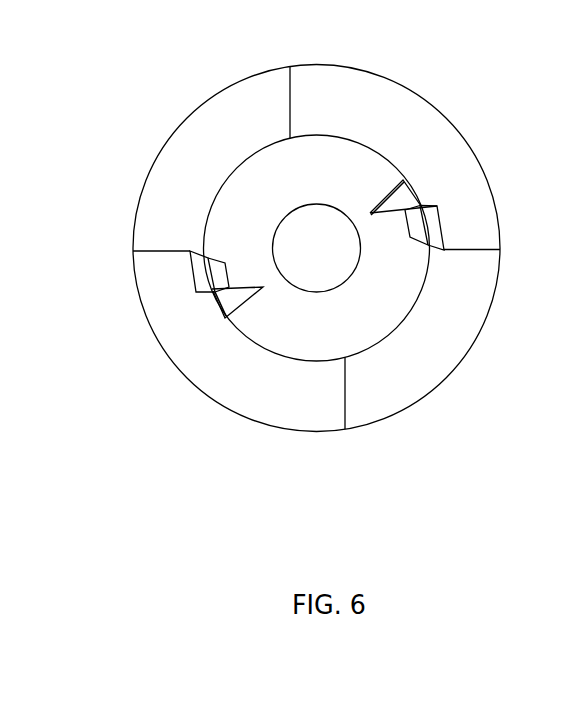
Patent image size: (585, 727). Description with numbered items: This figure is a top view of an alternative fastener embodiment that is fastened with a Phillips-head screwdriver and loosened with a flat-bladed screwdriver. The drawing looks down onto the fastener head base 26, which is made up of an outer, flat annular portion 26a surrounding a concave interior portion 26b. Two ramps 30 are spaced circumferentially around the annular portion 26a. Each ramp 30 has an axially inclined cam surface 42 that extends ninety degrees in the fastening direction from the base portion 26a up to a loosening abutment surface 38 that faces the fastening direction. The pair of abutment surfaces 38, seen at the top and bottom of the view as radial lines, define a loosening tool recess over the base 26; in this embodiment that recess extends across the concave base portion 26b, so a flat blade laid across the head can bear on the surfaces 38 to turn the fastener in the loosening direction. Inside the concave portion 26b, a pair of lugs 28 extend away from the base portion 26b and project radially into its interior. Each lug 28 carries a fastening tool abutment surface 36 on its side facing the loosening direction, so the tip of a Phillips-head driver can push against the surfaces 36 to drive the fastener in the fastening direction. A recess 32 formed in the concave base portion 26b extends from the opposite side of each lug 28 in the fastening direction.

The fastener head base 26 is at (217, 386).
The outer flat annular portion 26a is at (257, 407).
The concave interior portion 26b is at (316, 134).
The lug 28 is at (405, 197).
The ramp 30 is at (230, 110).
The recess 32 is at (437, 235).
The fastening tool abutment surface 36 is at (400, 196).
The loosening abutment surface 38 is at (291, 101).
The axially inclined cam surface 42 is at (175, 155).